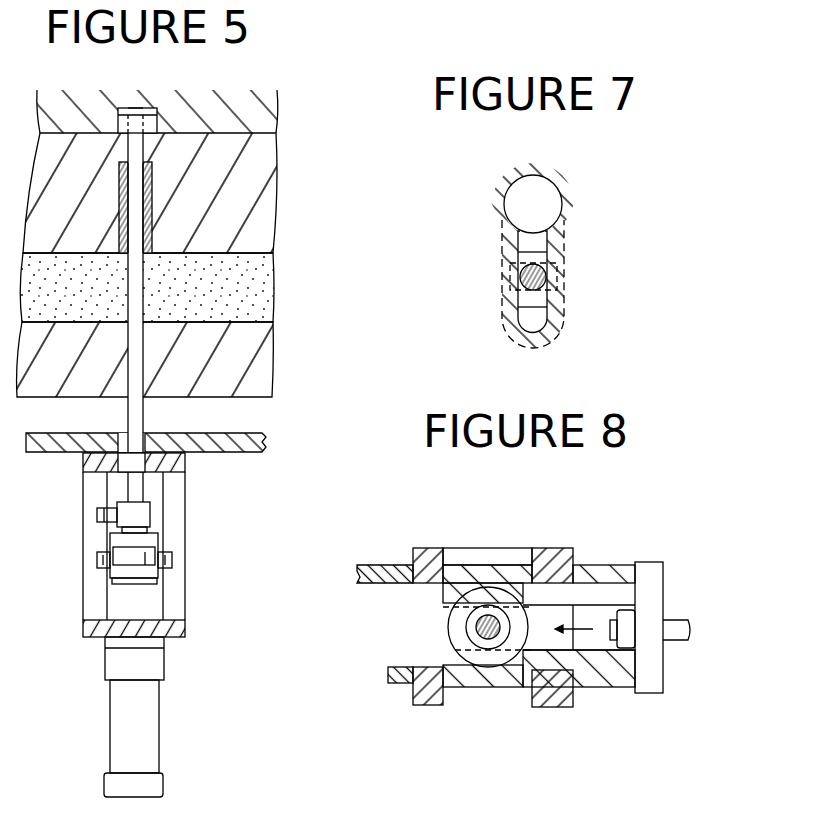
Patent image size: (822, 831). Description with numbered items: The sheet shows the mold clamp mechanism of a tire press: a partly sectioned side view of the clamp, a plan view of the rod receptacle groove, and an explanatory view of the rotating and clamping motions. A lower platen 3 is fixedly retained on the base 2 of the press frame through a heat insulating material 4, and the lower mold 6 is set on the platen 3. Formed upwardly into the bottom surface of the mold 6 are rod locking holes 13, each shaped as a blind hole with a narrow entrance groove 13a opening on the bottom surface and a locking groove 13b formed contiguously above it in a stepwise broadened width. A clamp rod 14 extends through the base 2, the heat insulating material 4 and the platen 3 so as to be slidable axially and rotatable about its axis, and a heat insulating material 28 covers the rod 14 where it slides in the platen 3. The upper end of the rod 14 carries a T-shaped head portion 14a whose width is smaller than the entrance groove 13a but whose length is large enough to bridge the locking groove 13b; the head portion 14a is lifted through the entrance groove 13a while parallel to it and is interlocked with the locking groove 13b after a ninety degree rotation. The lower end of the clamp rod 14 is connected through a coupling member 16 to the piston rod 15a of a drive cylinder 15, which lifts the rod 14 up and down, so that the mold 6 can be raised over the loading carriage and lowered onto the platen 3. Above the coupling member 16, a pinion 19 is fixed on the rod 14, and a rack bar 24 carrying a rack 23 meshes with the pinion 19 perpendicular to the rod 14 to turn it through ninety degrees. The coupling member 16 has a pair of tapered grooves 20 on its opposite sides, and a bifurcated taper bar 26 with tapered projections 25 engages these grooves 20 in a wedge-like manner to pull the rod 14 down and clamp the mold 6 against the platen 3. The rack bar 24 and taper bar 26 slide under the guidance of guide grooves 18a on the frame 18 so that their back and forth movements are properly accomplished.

In FIG. 5, the base 2 is at (243, 372).
In FIG. 5, the lower platen 3 is at (238, 147).
In FIG. 5, the heat insulating material 4 is at (73, 285).
In FIG. 5, the lower mold 6 is at (255, 113).
In FIG. 5, the rod locking hole 13 is at (157, 115).
In FIG. 7, the rod locking hole 13 is at (500, 190).
In FIG. 7, the entrance groove 13a is at (548, 245).
In FIG. 7, the locking groove 13b is at (565, 310).
In FIG. 5, the clamp rod 14 is at (135, 353).
In FIG. 7, the clamp rod 14 is at (520, 278).
In FIG. 8, the clamp rod 14 is at (481, 630).
In FIG. 5, the head portion 14a is at (124, 107).
In FIG. 7, the head portion 14a is at (512, 272).
In FIG. 5, the drive cylinder 15 is at (128, 737).
In FIG. 5, the piston rod 15a is at (100, 640).
In FIG. 5, the coupling member 16 is at (185, 527).
In FIG. 8, the coupling member 16 is at (545, 605).
In FIG. 5, the frame 18 is at (90, 602).
In FIG. 8, the frame 18 is at (428, 555).
In FIG. 5, the guide grooves 18a is at (97, 515).
In FIG. 5, the pinion 19 is at (150, 512).
In FIG. 8, the pinion 19 is at (468, 622).
In FIG. 5, the tapered grooves 20 is at (135, 560).
In FIG. 8, the tapered grooves 20 is at (498, 583).
In FIG. 5, the rack 23 is at (107, 508).
In FIG. 5, the rack bar 24 is at (97, 522).
In FIG. 5, the tapered projections 25 is at (160, 572).
In FIG. 5, the taper bar 26 is at (97, 558).
In FIG. 5, the heat insulating material 28 is at (153, 218).